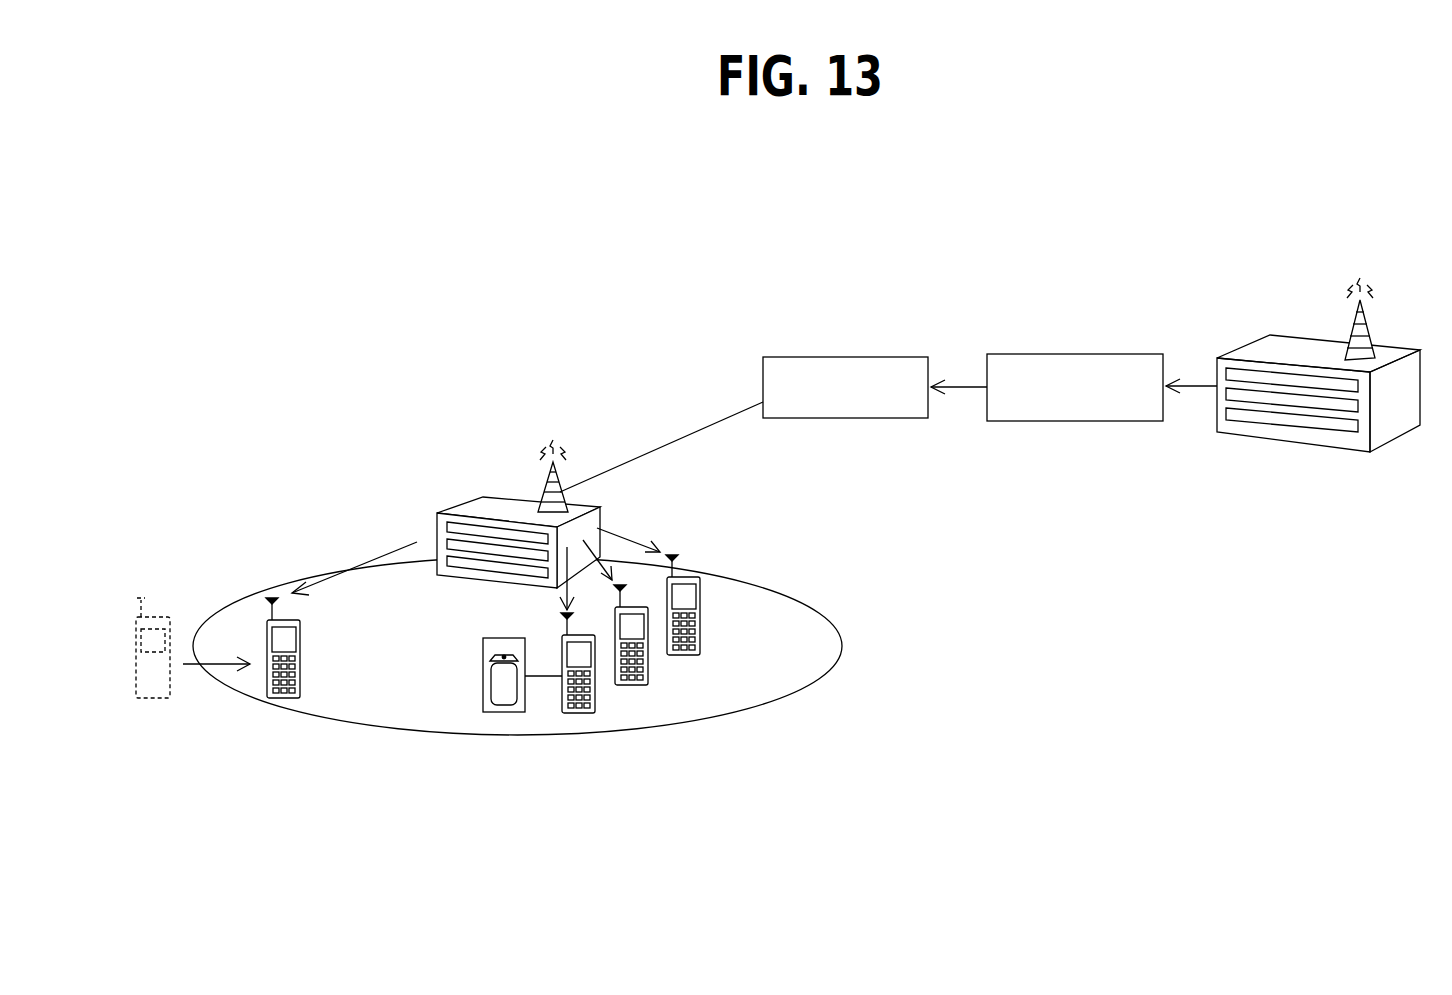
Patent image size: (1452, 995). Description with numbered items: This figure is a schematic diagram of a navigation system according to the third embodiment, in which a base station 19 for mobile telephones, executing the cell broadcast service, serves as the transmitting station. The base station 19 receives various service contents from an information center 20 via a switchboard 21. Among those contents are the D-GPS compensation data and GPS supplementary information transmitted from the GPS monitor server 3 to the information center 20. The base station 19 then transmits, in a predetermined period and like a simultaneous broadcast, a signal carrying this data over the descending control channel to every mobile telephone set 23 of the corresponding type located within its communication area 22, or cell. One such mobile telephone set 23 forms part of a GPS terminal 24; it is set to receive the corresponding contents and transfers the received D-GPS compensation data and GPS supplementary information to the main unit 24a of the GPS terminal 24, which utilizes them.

The GPS monitor server 3 is at (1295, 445).
The base station 19 is at (520, 495).
The information center 20 is at (1060, 422).
The switchboard 21 is at (858, 420).
The communication area 22 is at (843, 643).
The mobile telephone set 23 is at (300, 662).
The GPS terminal 24 is at (515, 727).
The main unit 24a is at (502, 710).